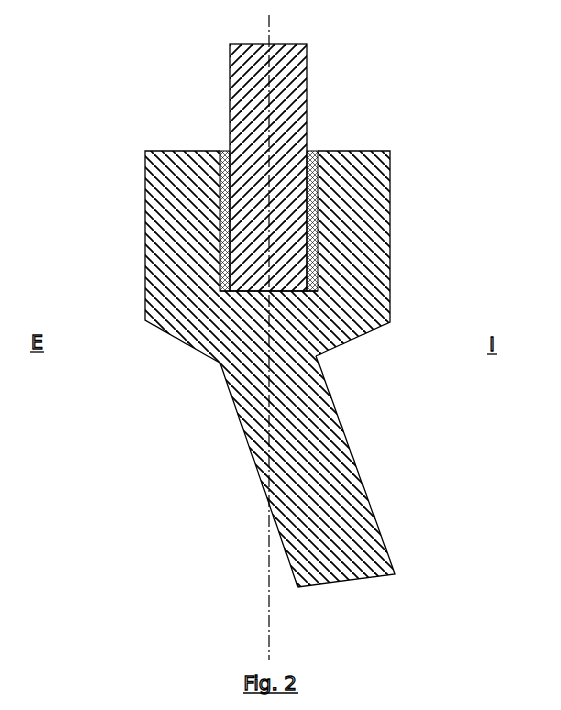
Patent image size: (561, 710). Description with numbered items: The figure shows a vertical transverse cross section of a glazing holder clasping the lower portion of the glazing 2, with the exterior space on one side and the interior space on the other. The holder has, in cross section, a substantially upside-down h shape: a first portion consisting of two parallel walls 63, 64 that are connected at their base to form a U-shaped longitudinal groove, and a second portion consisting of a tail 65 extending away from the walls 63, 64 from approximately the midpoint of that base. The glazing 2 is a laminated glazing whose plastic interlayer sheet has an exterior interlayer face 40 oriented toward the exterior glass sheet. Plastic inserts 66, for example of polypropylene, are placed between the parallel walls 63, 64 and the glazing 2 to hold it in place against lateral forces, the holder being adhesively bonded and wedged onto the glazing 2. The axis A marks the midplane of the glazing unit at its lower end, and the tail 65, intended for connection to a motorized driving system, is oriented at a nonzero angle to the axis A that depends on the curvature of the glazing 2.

The glazing 2 is at (296, 78).
The exterior interlayer face 40 is at (192, 359).
The parallel wall 63 is at (152, 182).
The parallel wall 64 is at (383, 175).
The tail 65 is at (344, 435).
The inserts 66 is at (226, 163).
The axis A is at (269, 649).